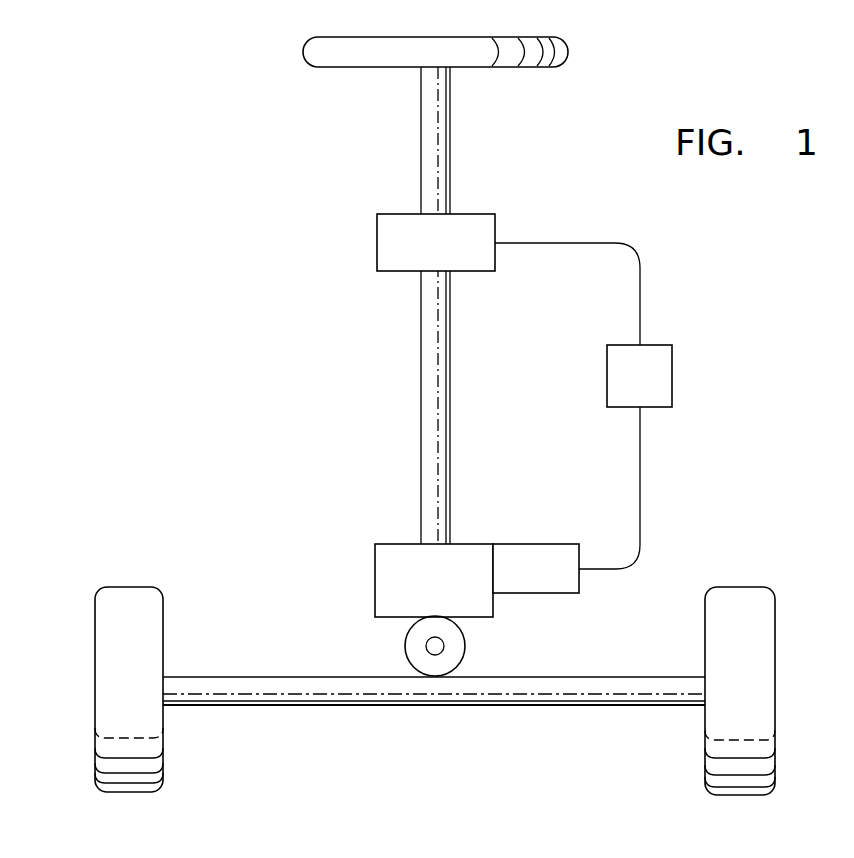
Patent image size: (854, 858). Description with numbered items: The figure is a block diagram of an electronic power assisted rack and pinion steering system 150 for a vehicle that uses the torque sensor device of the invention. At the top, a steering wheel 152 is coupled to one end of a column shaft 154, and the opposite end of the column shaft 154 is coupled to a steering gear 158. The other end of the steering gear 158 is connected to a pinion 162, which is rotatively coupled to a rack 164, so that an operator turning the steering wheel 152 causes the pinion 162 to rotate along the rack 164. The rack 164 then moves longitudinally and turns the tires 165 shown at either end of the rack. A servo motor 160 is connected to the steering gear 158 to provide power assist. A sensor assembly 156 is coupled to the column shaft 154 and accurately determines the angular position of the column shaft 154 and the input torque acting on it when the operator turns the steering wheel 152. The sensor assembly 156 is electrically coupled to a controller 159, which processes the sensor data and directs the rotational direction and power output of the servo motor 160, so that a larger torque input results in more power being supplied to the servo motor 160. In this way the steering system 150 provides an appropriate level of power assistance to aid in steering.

The steering system 150 is at (312, 166).
The steering wheel 152 is at (567, 38).
The column shaft 154 is at (428, 394).
The sensor assembly 156 is at (385, 243).
The steering gear 158 is at (385, 569).
The controller 159 is at (663, 374).
The servo motor 160 is at (532, 548).
The pinion 162 is at (405, 652).
The rack 164 is at (295, 702).
The tires 165 is at (125, 587).